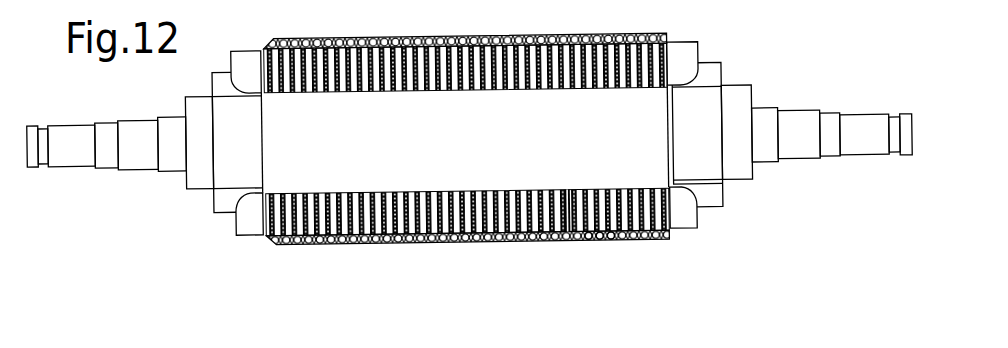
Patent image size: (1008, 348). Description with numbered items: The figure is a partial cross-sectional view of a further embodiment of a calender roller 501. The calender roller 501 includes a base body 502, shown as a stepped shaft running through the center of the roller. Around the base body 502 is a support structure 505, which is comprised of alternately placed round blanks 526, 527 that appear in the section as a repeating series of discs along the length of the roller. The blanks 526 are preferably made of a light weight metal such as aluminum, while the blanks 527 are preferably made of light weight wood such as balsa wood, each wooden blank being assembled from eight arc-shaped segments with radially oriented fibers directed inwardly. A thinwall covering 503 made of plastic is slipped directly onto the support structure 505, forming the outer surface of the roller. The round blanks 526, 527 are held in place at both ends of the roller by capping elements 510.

The calender roller 501 is at (377, 258).
The base body 502 is at (263, 168).
The thinwall covering 503 is at (555, 235).
The support structure 505 is at (453, 219).
The capping elements 510 is at (229, 252).
The round blanks 526 is at (567, 207).
The round wooden blanks 527 is at (600, 235).